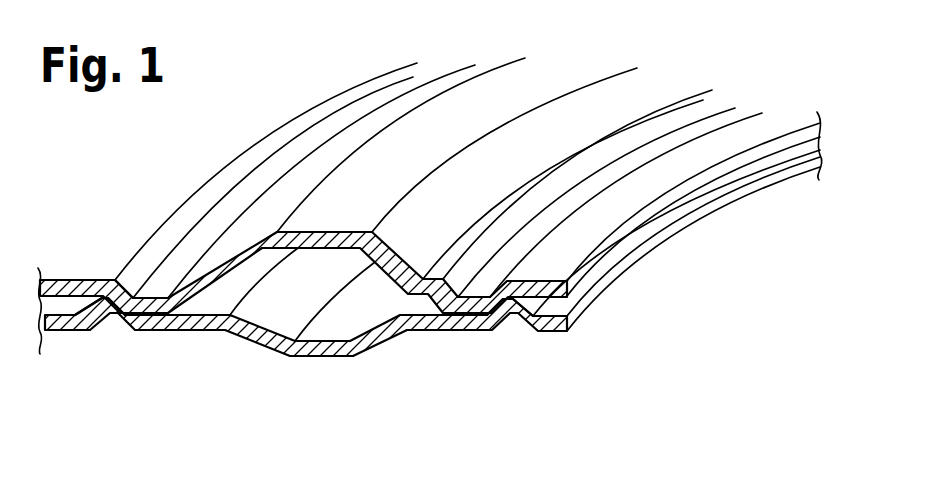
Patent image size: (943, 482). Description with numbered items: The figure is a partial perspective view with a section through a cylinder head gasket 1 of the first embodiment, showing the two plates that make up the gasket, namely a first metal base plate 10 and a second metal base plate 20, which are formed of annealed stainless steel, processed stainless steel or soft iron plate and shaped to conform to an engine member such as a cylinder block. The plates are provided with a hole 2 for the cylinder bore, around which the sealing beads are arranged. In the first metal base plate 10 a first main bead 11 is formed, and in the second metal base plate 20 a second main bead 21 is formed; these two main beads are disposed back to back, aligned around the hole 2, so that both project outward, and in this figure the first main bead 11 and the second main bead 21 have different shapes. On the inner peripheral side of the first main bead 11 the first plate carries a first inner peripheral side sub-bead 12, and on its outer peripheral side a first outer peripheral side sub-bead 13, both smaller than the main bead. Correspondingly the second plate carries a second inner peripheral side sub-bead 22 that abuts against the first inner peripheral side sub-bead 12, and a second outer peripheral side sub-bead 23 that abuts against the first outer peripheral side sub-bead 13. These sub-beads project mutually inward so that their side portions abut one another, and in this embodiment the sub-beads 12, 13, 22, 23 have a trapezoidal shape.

The cylinder head gasket 1 is at (636, 91).
The hole for cylinder bore 2 is at (650, 377).
The first metal base plate 10 is at (632, 232).
The first main bead 11 is at (323, 232).
The first inner peripheral side sub-bead 12 is at (472, 290).
The first outer peripheral side sub-bead 13 is at (157, 300).
The second metal base plate 20 is at (617, 277).
The second main bead 21 is at (317, 358).
The second inner peripheral side sub-bead 22 is at (507, 312).
The second outer peripheral side sub-bead 23 is at (103, 322).